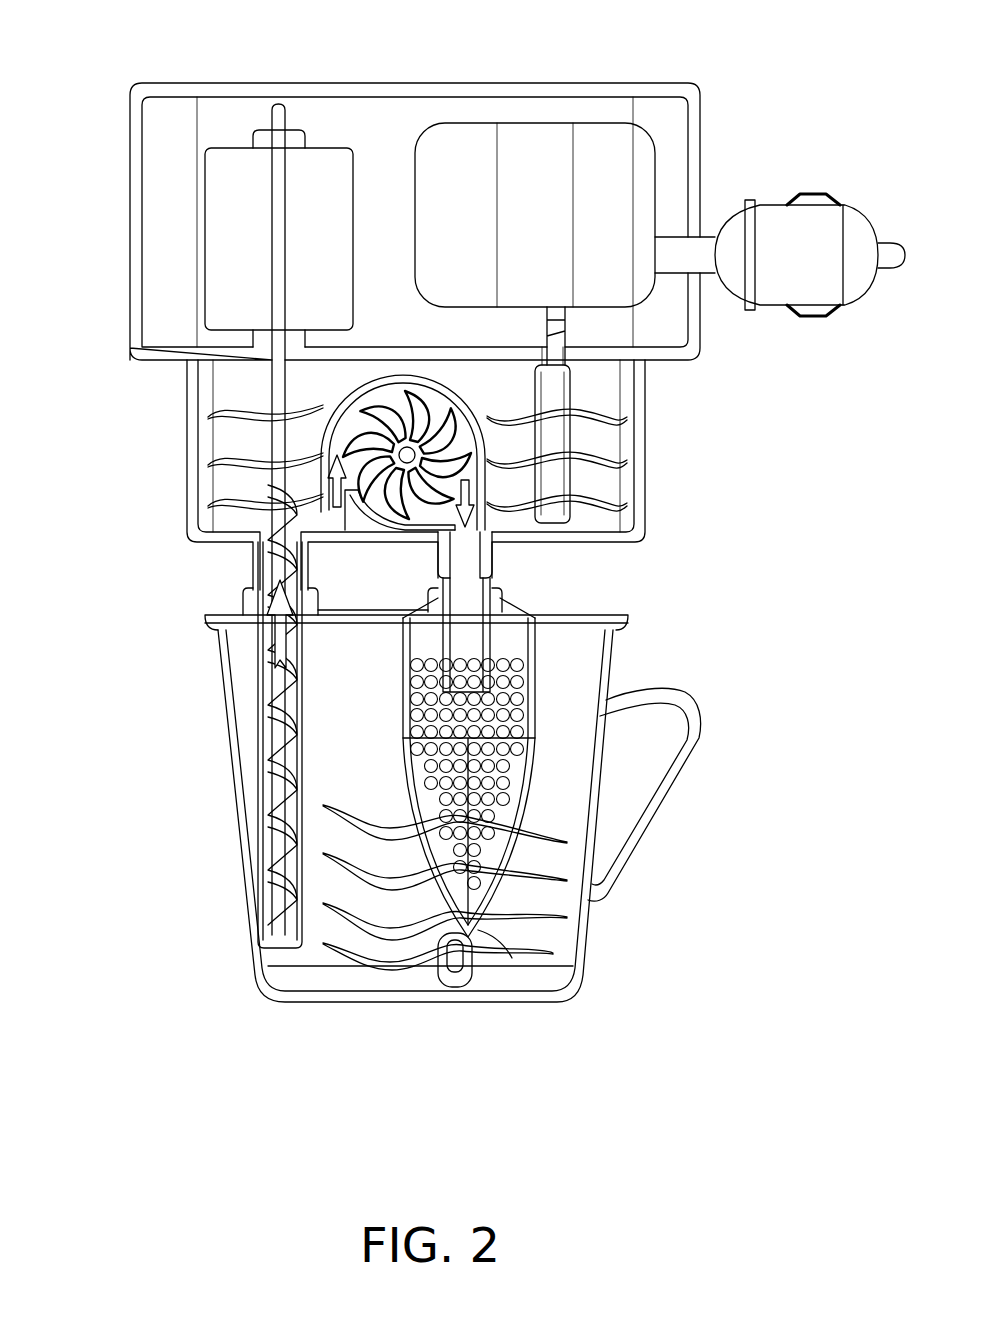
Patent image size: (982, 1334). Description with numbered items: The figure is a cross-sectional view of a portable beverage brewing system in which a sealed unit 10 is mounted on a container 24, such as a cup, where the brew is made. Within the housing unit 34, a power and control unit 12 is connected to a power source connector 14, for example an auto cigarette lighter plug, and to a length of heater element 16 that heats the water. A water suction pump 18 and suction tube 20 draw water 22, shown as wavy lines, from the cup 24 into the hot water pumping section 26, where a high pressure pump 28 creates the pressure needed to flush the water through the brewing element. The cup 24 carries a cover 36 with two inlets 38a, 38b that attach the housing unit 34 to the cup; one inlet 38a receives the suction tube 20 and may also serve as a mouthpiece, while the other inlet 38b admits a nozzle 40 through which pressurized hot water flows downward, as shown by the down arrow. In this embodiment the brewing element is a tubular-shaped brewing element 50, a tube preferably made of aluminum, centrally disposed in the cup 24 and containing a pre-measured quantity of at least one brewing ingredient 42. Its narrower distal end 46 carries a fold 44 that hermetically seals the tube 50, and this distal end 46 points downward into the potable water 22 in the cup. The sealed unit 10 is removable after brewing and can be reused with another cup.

The sealed unit 10 is at (142, 394).
The power and control unit 12 is at (555, 123).
The power source connector 14 is at (790, 205).
The heater element 16 is at (570, 396).
The water suction pump 18 is at (205, 232).
The suction tube 20 is at (265, 690).
The water 22 is at (548, 935).
The container 24 is at (195, 818).
The hot water pumping section 26 is at (652, 455).
The high pressure pump 28 is at (320, 434).
The housing unit 34 is at (130, 142).
The cover 36 is at (210, 614).
The inlet 38a is at (245, 590).
The inlet 38b is at (520, 592).
The nozzle 40 is at (495, 572).
The brewing ingredient 42 is at (515, 702).
The fold 44 is at (440, 945).
The distal end 46 is at (482, 925).
The tubular-shaped brewing element 50 is at (533, 762).